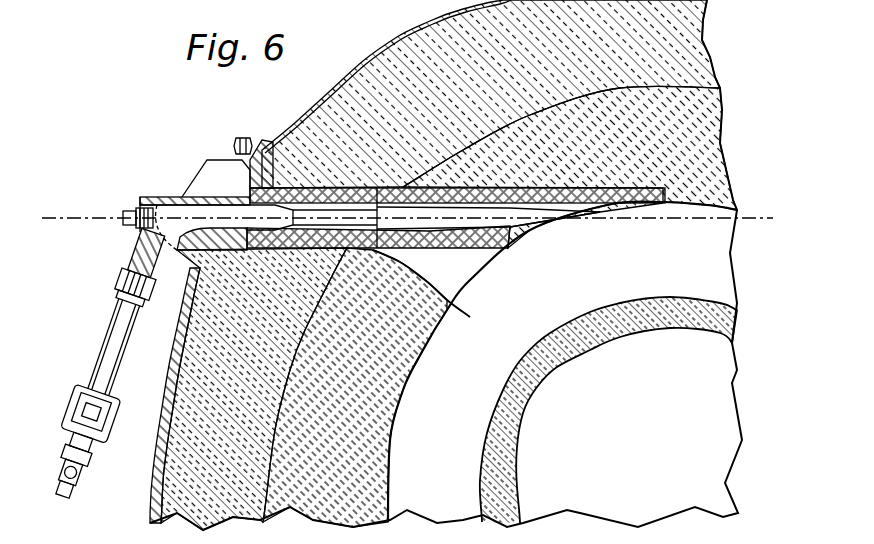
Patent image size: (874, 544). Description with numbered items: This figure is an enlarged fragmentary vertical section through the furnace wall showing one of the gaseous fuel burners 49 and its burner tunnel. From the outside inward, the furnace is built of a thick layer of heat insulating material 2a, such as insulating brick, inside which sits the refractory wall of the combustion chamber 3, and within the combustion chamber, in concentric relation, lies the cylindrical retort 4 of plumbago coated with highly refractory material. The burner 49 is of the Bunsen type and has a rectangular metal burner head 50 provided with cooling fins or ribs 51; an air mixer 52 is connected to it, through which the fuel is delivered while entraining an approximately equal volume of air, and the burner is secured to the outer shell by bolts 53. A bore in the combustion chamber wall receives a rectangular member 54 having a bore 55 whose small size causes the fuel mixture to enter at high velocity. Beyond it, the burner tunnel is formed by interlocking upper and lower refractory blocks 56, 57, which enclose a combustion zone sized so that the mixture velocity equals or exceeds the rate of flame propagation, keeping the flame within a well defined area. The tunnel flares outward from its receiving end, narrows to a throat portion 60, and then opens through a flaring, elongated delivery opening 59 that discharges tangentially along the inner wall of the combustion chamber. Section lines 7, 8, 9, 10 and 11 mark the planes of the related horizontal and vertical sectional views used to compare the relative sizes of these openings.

The layer of heat insulating material 2a is at (372, 83).
The wall of the combustion chamber 3 is at (378, 425).
The cylindrical retort 4 is at (527, 400).
The section line 7— 7 is at (77, 193).
The section line 8— 8 is at (53, 235).
The section line 9— 9 is at (663, 187).
The section line 10— 10 is at (415, 187).
The section line 11— 11 is at (427, 157).
The gaseous fuel burner 49 is at (180, 200).
The burner head 50 is at (138, 197).
The cooling fins or ribs 51 is at (208, 170).
The air mixer 52 is at (120, 337).
The bolts 53 is at (240, 147).
The rectangular member 54 is at (280, 188).
The bore 55 is at (312, 188).
The upper block 56 is at (573, 202).
The lower block 57 is at (478, 247).
The delivery opening 59 is at (457, 257).
The throat portion 60 is at (518, 218).